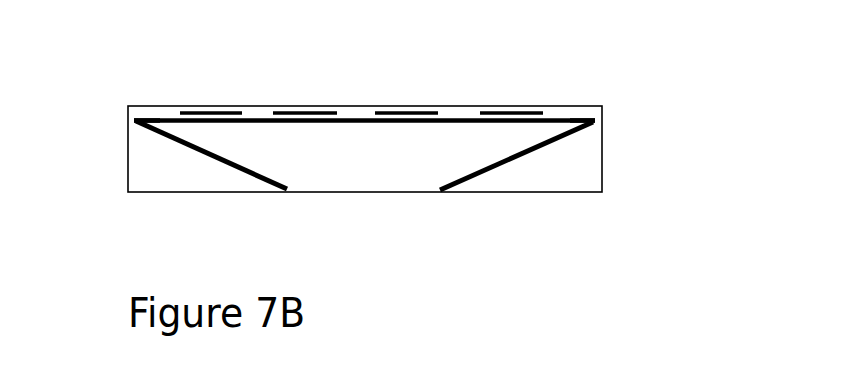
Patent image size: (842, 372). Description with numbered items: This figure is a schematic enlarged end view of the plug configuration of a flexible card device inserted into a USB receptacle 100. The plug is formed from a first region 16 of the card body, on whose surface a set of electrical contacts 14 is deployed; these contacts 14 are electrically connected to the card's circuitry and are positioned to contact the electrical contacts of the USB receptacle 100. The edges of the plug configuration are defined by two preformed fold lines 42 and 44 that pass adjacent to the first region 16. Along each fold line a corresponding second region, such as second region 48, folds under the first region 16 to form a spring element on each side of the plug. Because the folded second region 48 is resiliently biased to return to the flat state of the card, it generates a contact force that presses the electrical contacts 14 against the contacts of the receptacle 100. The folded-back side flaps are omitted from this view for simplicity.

The USB receptacle 100 is at (363, 193).
The electrical contacts 14 is at (305, 112).
The first region 16 is at (457, 119).
The preformed fold line 42 is at (594, 123).
The preformed fold line 44 is at (136, 121).
The second region 48 is at (193, 148).